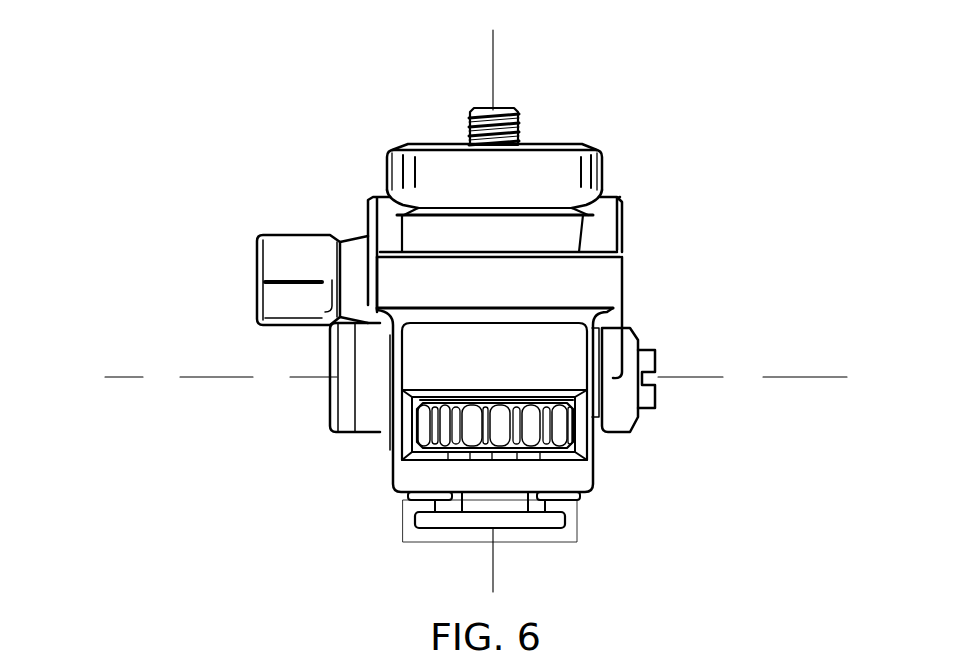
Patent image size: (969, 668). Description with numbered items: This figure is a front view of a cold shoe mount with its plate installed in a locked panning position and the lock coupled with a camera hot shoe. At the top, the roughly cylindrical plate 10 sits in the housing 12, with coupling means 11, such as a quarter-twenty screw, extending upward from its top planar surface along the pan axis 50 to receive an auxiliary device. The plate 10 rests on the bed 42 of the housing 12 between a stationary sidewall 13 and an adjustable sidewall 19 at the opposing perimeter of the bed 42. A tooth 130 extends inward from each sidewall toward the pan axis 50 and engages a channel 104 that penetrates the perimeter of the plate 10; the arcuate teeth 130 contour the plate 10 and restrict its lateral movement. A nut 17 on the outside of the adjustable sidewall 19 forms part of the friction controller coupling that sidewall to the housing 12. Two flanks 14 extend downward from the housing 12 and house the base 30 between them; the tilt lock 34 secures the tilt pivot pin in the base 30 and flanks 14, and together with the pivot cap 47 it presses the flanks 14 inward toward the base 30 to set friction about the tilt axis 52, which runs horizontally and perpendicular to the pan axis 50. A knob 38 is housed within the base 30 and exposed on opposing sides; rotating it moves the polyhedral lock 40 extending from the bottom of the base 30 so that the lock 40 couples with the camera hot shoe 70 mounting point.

The plate 10 is at (430, 165).
The coupling means 11 is at (493, 110).
The housing 12 is at (624, 250).
The stationary sidewall 13 is at (603, 230).
The flanks 14 is at (615, 360).
The nut 17 is at (261, 280).
The adjustable sidewall 19 is at (380, 228).
The base 30 is at (450, 370).
The tilt lock 34 is at (343, 377).
The knob 38 is at (497, 425).
The lock 40 is at (460, 510).
The bed 42 is at (533, 258).
The pivot cap 47 is at (647, 398).
The pan axis 50 is at (495, 92).
The tilt axis 52 is at (150, 378).
The camera hot shoe 70 is at (548, 535).
The channel 104 is at (513, 208).
The tooth 130 is at (410, 210).